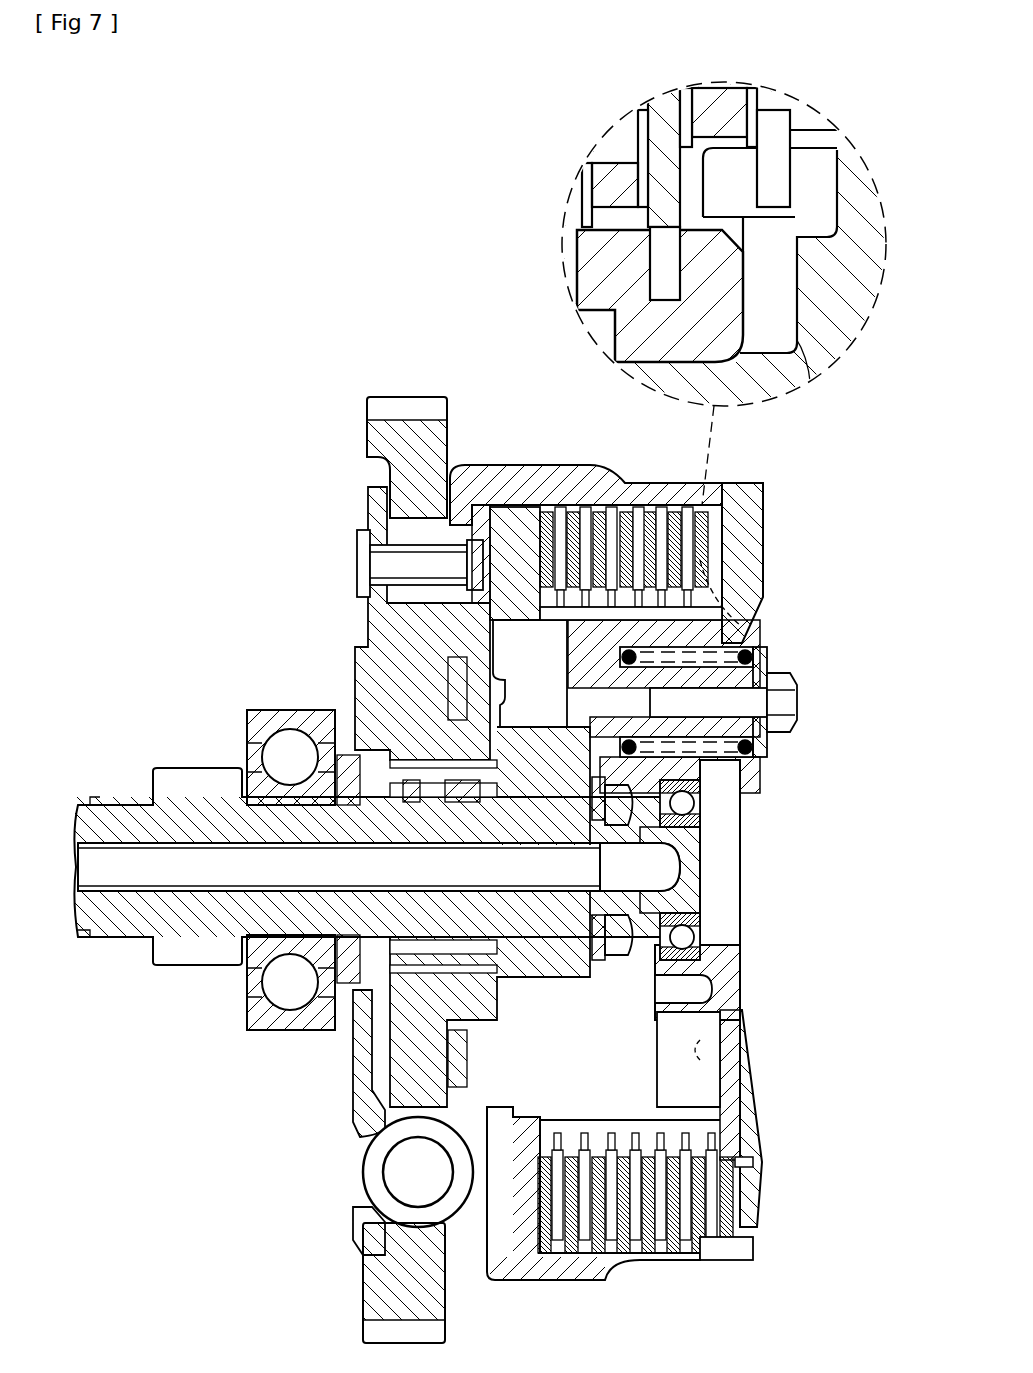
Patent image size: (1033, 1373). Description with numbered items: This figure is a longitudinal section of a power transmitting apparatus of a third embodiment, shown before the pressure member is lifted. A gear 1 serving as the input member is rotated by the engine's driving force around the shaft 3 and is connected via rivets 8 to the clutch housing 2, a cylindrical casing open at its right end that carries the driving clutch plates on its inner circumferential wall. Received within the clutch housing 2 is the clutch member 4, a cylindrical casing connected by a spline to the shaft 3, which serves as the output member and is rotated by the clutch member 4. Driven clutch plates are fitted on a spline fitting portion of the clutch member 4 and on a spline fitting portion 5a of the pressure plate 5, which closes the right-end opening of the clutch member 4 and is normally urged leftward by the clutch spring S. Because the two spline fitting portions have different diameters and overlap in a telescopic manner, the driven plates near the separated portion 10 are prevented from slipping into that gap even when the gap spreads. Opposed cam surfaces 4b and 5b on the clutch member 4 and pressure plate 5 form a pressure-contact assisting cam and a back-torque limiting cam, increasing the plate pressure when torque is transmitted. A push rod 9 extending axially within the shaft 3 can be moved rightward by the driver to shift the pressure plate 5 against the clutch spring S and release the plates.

The gear 1 is at (365, 440).
The clutch housing 2 is at (540, 465).
The shaft 3 is at (116, 800).
The clutch member 4 is at (520, 606).
The cam surface 4b is at (727, 1050).
The pressure plate 5 is at (763, 570).
The spline fitting portion 5a is at (737, 1167).
The cam surface 5b is at (697, 1087).
The rivets 8 is at (355, 546).
The push rod 9 is at (130, 878).
The separated portion 10 is at (740, 622).
The clutch spring S is at (748, 762).